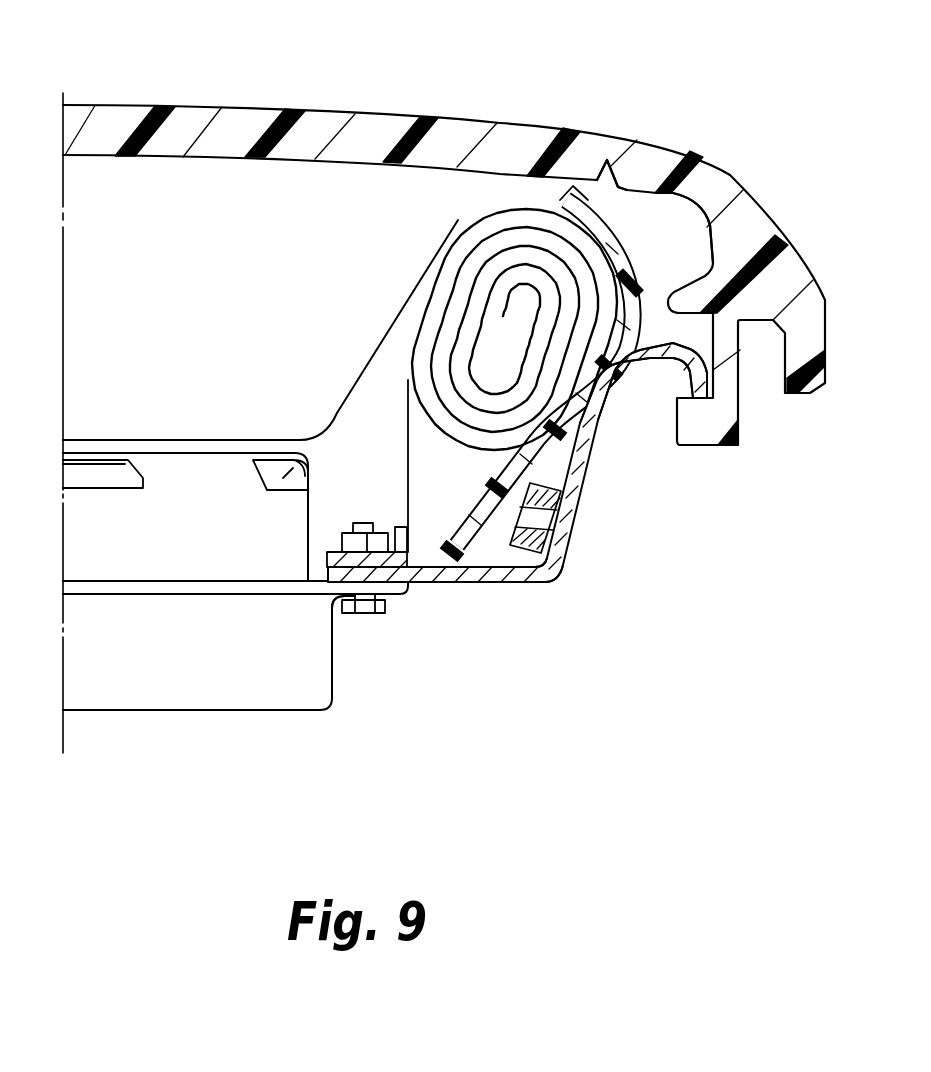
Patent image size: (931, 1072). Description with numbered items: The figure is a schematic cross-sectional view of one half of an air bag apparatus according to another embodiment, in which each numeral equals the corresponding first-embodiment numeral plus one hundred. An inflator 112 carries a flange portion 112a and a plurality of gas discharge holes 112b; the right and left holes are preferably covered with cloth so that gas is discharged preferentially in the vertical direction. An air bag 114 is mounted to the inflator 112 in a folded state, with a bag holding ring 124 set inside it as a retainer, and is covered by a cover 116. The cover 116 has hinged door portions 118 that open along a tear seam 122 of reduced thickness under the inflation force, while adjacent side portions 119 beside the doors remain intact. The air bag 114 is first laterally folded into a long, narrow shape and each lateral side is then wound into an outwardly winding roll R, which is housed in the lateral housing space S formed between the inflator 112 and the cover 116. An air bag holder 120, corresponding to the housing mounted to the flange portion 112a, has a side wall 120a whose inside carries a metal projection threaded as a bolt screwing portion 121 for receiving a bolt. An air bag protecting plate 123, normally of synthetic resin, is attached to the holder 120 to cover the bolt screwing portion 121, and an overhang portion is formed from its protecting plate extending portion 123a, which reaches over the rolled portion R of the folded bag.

The inflator 112 is at (200, 687).
The flange portion 112a is at (347, 600).
The gas discharge holes 112b is at (297, 453).
The air bag 114 is at (163, 440).
The cover 116 is at (737, 174).
The hinged door portions 118 is at (233, 132).
The adjacent side portions 119 is at (670, 167).
The air bag holder 120 is at (515, 583).
The side wall 120a is at (583, 463).
The bolt screwing portion 121 is at (525, 582).
The tear seam 122 is at (607, 163).
The air bag protecting plate 123 is at (593, 380).
The protecting plate extending portion 123a is at (580, 187).
The bag holding ring 124 is at (413, 543).
The outwardly winding roll R is at (583, 490).
The lateral housing space S is at (432, 231).